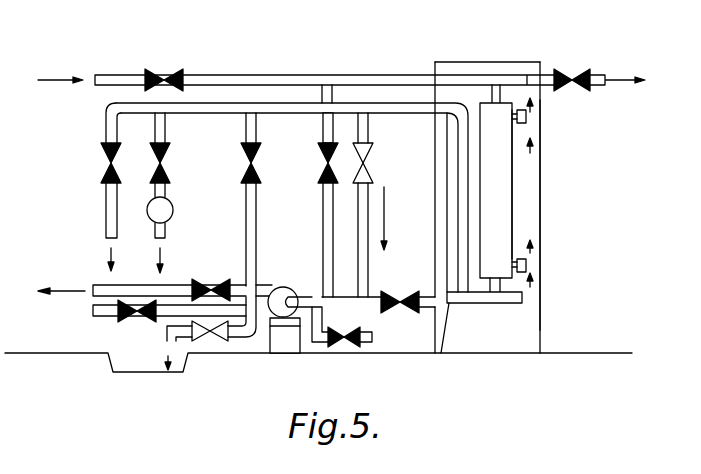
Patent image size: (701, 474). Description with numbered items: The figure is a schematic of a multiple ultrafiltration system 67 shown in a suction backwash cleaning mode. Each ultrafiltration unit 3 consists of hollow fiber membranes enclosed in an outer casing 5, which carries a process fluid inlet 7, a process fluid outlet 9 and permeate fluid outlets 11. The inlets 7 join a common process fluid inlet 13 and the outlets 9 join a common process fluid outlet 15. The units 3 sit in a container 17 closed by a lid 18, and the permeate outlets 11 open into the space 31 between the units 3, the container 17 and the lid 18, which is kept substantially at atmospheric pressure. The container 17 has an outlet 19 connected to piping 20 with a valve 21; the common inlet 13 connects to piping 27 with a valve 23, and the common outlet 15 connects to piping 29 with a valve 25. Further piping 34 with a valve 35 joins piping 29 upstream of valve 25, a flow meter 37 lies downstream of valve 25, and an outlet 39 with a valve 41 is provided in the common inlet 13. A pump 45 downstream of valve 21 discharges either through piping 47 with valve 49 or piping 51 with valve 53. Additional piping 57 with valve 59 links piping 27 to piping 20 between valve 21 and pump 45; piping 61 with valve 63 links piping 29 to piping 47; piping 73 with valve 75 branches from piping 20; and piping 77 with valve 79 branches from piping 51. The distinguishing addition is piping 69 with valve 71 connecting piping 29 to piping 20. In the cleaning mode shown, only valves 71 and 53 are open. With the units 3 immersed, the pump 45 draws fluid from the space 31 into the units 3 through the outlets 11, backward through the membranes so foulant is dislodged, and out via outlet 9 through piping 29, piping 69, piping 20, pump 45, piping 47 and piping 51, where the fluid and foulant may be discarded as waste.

The ultrafiltration unit 3 is at (522, 166).
The outer casing 5 is at (513, 205).
The process fluid inlet 7 is at (492, 100).
The process fluid outlet 9 is at (498, 288).
The permeate fluid outlet 11 is at (527, 116).
The common process fluid inlet 13 is at (497, 102).
The common process fluid outlet 15 is at (458, 304).
The container 17 is at (434, 206).
The lid 18 is at (512, 62).
The outlet 19 is at (432, 298).
The piping 20 is at (326, 298).
The valve 21 is at (404, 312).
The valve 23 is at (164, 69).
The valve 25 is at (168, 158).
The piping 27 is at (268, 74).
The piping 29 is at (297, 114).
The space 31 is at (434, 167).
The piping 34 is at (106, 116).
The valve 35 is at (120, 160).
The flow meter 37 is at (170, 214).
The outlet 39 is at (547, 76).
The valve 41 is at (598, 76).
The pump 45 is at (286, 288).
The piping 47 is at (135, 284).
The valve 49 is at (207, 278).
The piping 51 is at (167, 339).
The valve 53 is at (203, 342).
The piping 57 is at (333, 96).
The valve 59 is at (336, 162).
The piping 61 is at (258, 122).
The valve 63 is at (247, 156).
The multiple ultrafiltration system 67 is at (82, 196).
The piping 69 is at (370, 150).
The valve 71 is at (369, 168).
The piping 73 is at (300, 330).
The valve 75 is at (340, 348).
The piping 77 is at (170, 304).
The valve 79 is at (128, 322).